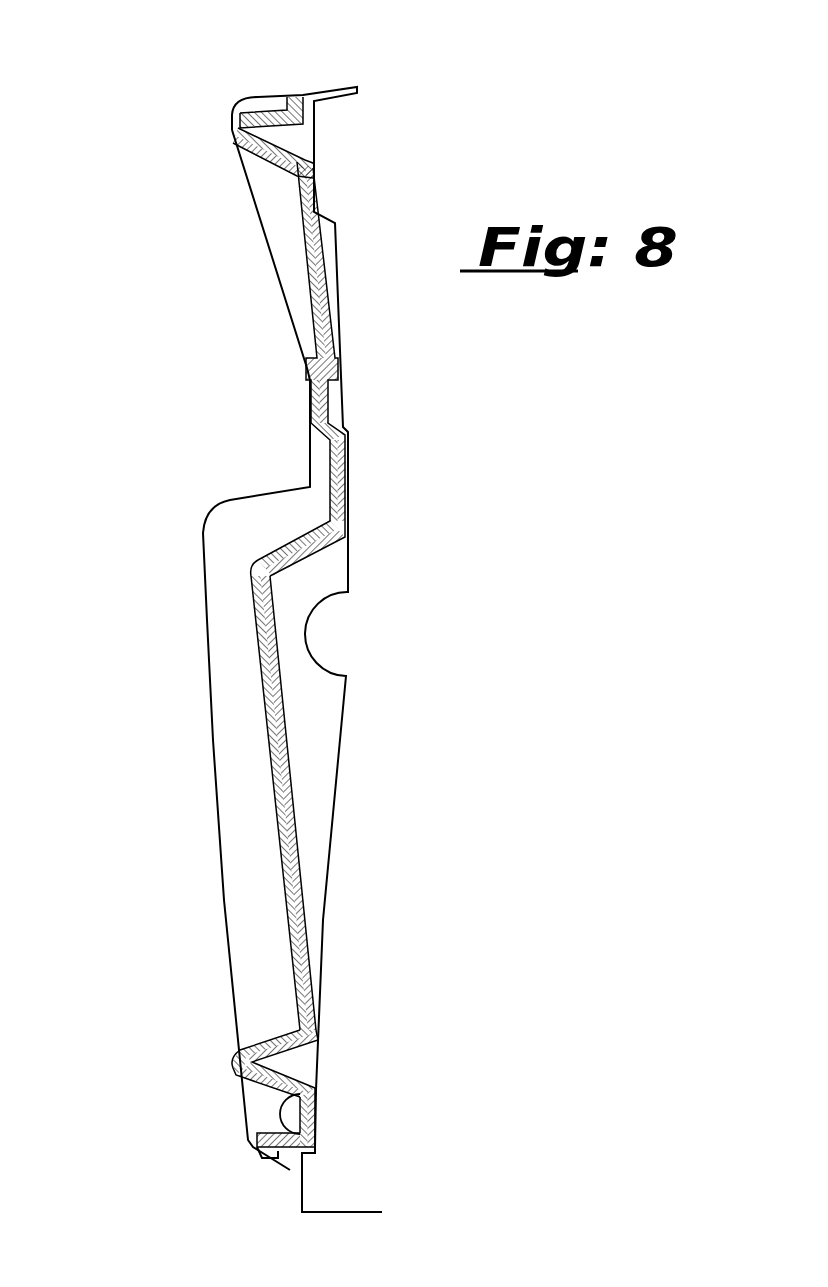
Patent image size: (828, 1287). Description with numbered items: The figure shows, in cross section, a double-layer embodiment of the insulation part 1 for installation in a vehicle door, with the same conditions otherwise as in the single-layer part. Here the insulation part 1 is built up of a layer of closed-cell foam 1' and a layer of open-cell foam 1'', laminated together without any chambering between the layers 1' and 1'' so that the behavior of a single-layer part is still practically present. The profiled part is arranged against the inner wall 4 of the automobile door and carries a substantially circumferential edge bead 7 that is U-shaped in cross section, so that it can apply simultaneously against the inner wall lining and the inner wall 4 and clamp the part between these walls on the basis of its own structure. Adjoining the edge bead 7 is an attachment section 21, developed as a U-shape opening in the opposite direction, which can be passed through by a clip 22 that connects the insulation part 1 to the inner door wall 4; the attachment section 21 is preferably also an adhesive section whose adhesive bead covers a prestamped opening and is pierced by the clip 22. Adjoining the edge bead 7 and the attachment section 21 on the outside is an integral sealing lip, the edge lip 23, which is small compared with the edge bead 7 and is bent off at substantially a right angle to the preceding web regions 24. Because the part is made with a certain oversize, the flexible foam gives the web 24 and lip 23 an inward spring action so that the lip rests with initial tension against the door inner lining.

The insulation part 1 is at (223, 596).
The layer of closed-cell foam 1' is at (201, 803).
The layer of open-cell foam 1'' is at (414, 803).
The inner wall 4 is at (333, 832).
The edge bead 7 is at (237, 125).
The attachment section 21 is at (313, 1089).
The clip 22 is at (314, 1131).
The edge lip 23 is at (253, 1146).
The web regions 24 is at (262, 112).